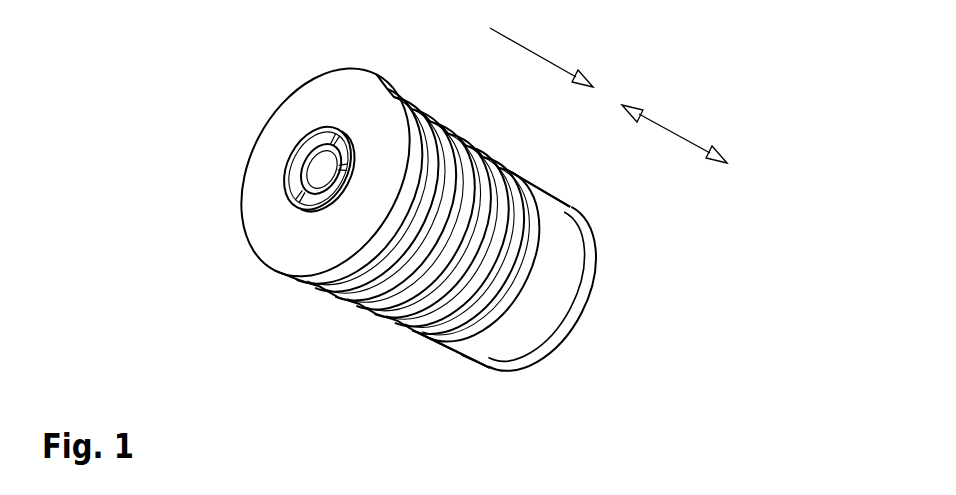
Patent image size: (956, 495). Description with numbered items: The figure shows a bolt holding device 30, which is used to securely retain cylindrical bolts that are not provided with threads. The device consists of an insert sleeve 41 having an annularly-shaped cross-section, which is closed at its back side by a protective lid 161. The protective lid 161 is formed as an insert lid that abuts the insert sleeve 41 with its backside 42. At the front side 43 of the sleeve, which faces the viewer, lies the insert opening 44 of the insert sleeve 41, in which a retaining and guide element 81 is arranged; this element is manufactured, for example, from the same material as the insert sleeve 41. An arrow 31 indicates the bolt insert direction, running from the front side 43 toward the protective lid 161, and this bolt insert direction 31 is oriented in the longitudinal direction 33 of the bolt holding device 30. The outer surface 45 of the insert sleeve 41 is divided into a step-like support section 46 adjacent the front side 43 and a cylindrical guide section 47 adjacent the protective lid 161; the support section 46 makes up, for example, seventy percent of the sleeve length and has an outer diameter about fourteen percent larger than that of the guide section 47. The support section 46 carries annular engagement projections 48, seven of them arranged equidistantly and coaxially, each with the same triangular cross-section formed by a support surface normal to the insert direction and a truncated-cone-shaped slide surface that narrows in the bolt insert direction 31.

The bolt holding device 30 is at (590, 202).
The bolt insert direction 31 is at (542, 58).
The longitudinal direction 33 is at (673, 133).
The insert sleeve 41 is at (252, 232).
The backside 42 is at (543, 328).
The front side 43 is at (318, 103).
The insert opening 44 is at (293, 178).
The outer surface 45 is at (513, 370).
The support section 46 is at (388, 290).
The guide section 47 is at (546, 245).
The engagement projections 48 is at (322, 283).
The retaining and guide element 81 is at (308, 155).
The protective lid 161 is at (568, 298).